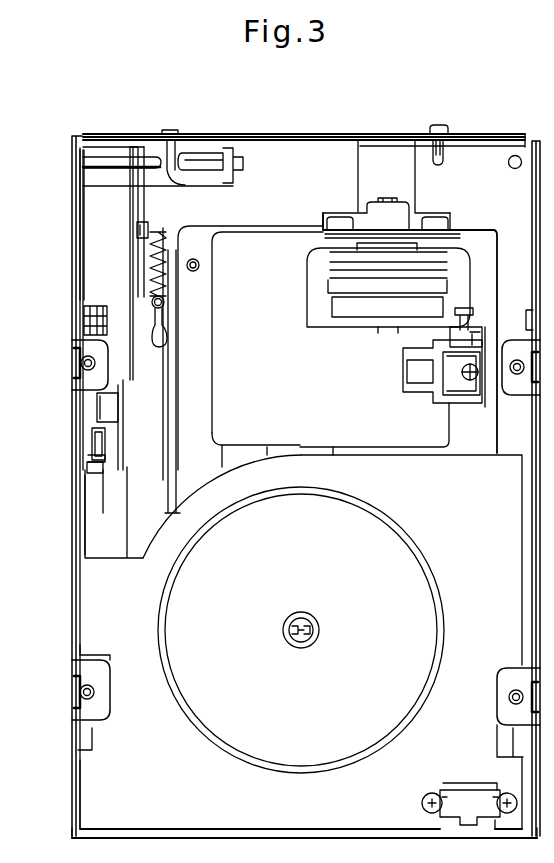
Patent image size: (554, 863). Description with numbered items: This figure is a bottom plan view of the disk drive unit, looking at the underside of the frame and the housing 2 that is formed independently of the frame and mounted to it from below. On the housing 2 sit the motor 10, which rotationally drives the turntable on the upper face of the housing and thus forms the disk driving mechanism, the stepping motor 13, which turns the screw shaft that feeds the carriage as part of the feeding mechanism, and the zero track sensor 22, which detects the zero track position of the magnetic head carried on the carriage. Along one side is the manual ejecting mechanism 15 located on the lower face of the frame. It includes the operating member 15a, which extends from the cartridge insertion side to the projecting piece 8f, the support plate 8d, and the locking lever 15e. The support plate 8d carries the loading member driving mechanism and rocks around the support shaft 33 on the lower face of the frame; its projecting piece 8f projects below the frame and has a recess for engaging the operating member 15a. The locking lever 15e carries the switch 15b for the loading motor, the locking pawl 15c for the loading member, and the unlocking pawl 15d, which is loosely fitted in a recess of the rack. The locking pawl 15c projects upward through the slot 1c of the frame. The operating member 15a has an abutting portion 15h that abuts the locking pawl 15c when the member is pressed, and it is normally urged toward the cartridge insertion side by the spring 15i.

The housing 2 is at (252, 247).
The support plate 8d is at (150, 158).
The projecting piece 8f is at (141, 226).
The motor 10 is at (197, 672).
The stepping motor 13 is at (433, 272).
The manual ejecting mechanism 15 is at (117, 258).
The operating member 15a is at (100, 518).
The switch 15b is at (107, 407).
The locking pawl 15c is at (92, 452).
The unlocking pawl 15d is at (80, 322).
The locking lever 15e is at (97, 233).
The abutting portion 15h is at (93, 467).
The spring 15i is at (167, 288).
The slot 1c is at (90, 433).
The zero track sensor 22 is at (467, 388).
The support shaft 33 is at (207, 158).